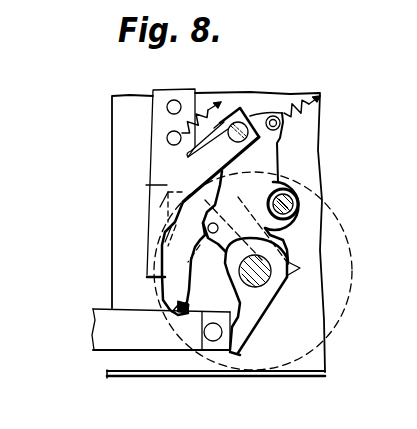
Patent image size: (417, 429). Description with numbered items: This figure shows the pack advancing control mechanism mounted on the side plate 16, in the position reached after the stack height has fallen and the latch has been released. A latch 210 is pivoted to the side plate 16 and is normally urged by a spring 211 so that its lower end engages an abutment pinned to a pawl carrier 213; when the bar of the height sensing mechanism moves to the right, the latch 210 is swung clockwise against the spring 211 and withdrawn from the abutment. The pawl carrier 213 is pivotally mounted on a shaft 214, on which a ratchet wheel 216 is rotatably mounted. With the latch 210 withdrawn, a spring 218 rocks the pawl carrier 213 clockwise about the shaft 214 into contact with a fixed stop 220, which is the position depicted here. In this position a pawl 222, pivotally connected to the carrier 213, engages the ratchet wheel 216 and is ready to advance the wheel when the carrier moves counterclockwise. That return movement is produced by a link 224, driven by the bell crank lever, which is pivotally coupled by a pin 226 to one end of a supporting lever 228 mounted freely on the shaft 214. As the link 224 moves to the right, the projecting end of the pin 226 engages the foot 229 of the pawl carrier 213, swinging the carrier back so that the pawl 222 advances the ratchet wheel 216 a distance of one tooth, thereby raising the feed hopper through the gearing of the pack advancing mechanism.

The side plate 16 is at (118, 132).
The latch 210 is at (176, 92).
The spring 211 is at (225, 101).
The pawl carrier 213 is at (277, 150).
The shaft 214 is at (262, 279).
The ratchet wheel 216 is at (147, 277).
The spring 218 is at (323, 107).
The fixed stop 220 is at (298, 204).
The pawl 222 is at (146, 185).
The link 224 is at (93, 323).
The pin 226 is at (213, 333).
The supporting lever 228 is at (174, 313).
The foot 229 is at (243, 350).